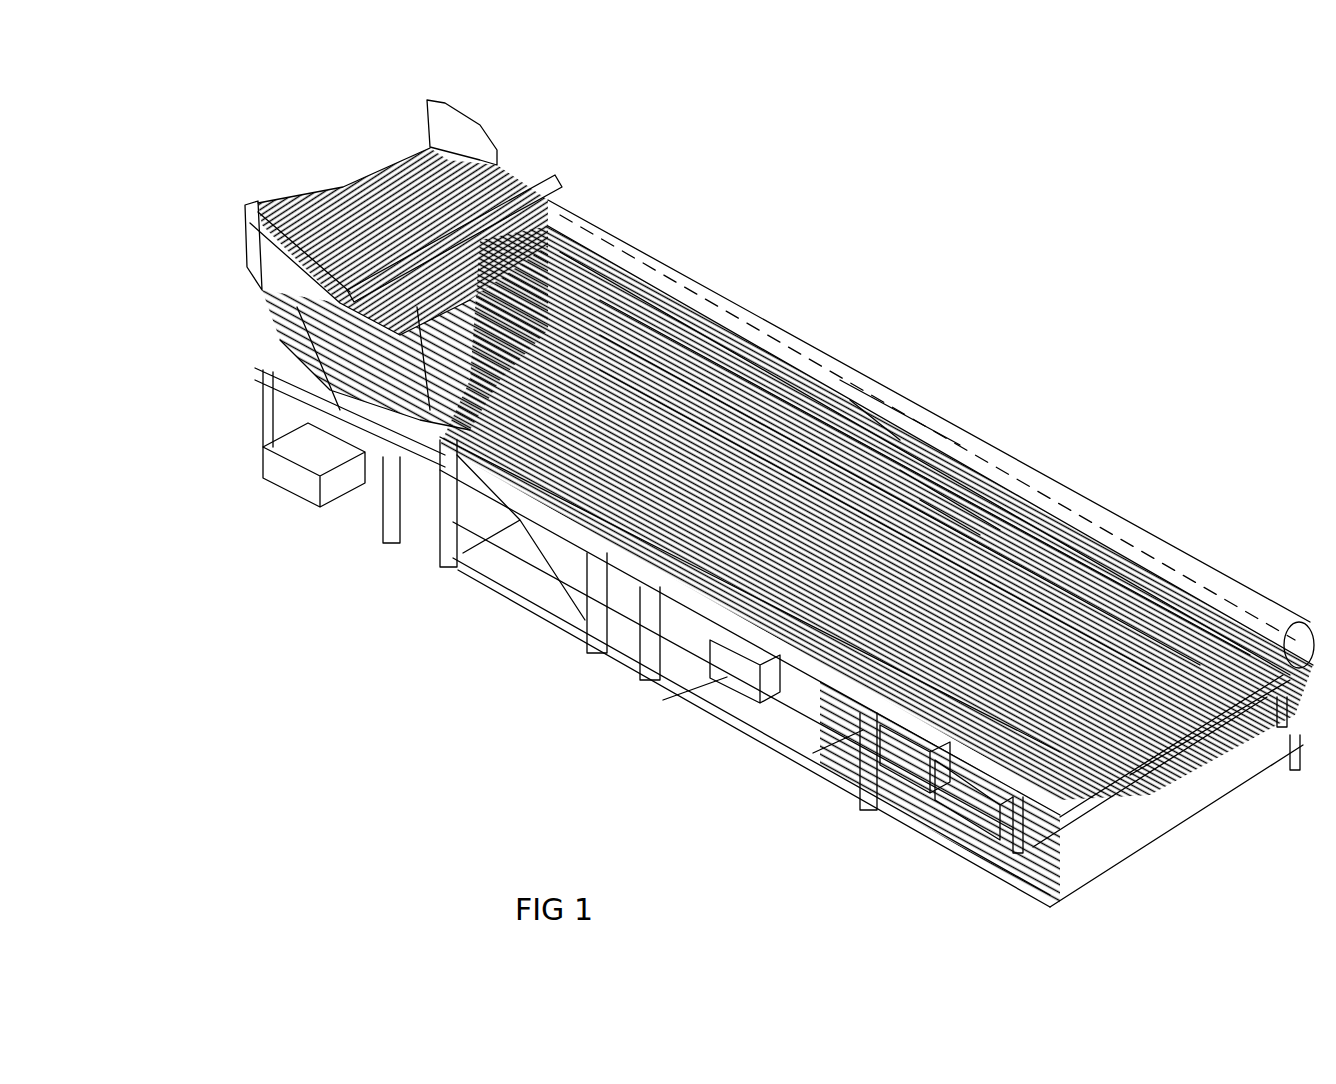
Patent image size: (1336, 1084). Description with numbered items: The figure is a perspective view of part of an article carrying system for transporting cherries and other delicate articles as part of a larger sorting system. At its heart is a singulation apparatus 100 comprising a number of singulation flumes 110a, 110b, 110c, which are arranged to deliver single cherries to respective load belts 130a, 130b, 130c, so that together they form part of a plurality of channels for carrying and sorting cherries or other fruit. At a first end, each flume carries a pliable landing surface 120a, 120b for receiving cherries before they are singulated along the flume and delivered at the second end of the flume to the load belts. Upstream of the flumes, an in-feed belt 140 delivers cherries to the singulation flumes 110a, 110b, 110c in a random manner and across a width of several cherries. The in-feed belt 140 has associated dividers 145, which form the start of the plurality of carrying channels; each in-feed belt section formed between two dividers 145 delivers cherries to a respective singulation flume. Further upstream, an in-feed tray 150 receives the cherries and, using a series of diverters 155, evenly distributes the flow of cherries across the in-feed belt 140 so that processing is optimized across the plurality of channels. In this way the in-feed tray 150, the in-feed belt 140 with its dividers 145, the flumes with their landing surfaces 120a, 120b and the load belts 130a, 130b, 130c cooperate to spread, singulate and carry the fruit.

The singulation apparatus 100 is at (330, 676).
The singulation flume 110a is at (640, 297).
The singulation flume 110b is at (640, 333).
The singulation flume 110c is at (650, 373).
The pliable landing surface 120a is at (607, 240).
The pliable landing surface 120b is at (625, 270).
The load belt 130a is at (905, 445).
The load belt 130b is at (913, 470).
The load belt 130c is at (940, 508).
The in-feed belt 140 is at (565, 208).
The dividers 145 is at (327, 298).
The in-feed tray 150 is at (430, 150).
The diverters 155 is at (390, 183).